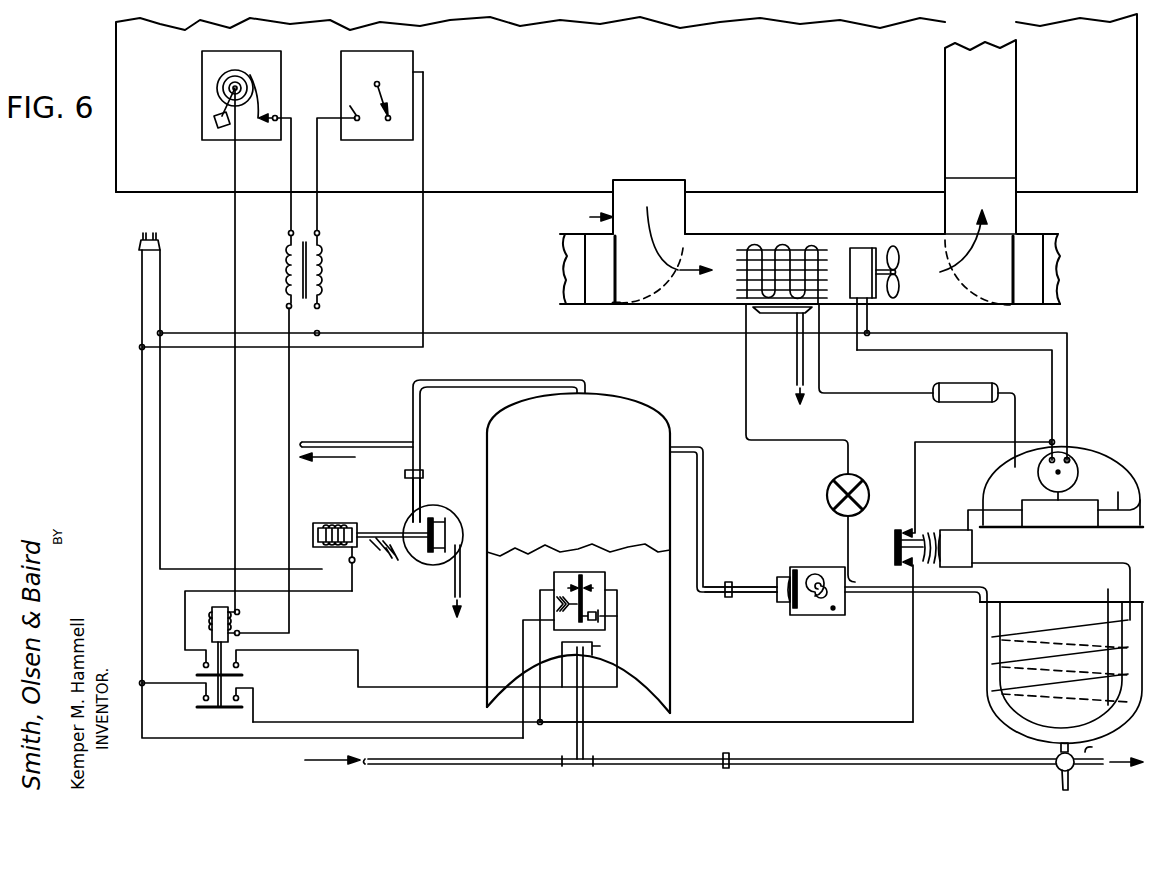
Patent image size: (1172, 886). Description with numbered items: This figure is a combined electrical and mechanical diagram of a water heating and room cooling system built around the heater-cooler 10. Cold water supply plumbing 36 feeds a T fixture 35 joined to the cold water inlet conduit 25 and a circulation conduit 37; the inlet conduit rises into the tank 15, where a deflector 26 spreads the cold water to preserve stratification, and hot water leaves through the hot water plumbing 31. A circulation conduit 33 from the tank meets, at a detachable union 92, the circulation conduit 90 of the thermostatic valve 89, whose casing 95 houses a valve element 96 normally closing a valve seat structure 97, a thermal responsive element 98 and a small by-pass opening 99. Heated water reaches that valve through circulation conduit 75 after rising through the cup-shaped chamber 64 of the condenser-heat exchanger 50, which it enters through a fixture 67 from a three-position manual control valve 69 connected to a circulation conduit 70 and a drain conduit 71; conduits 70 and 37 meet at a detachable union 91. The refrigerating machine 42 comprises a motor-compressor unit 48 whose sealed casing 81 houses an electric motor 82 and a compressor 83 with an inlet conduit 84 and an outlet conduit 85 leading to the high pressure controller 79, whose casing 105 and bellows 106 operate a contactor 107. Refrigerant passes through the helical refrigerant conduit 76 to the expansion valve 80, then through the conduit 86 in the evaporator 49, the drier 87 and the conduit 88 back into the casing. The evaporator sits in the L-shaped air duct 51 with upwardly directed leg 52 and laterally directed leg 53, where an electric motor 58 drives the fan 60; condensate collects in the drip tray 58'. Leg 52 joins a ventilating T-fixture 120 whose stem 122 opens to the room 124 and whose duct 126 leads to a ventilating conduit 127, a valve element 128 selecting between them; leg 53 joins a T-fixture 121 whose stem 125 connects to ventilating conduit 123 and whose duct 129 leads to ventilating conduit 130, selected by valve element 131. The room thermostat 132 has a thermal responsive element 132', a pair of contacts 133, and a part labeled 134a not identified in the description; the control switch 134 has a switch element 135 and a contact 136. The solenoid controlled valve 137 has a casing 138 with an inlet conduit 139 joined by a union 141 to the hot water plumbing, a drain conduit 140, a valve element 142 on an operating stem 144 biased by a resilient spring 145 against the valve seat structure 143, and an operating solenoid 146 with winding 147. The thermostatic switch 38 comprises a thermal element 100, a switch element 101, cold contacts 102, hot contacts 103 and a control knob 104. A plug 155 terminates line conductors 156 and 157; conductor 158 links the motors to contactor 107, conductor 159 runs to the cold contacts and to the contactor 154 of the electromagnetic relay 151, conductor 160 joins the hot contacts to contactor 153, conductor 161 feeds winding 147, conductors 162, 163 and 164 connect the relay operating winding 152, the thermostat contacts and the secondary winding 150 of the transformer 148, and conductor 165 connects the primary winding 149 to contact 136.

The heater-cooler 10 is at (678, 393).
The tank 15 is at (560, 518).
The cold water inlet conduit 25 is at (583, 700).
The deflector 26 is at (598, 654).
The hot water plumbing 31 is at (418, 421).
The circulation conduit 33 is at (705, 490).
The T fixture 35 is at (585, 759).
The cold water supply plumbing 36 is at (527, 759).
The circulation conduit 37 is at (650, 759).
The thermostatic switch 38 is at (548, 552).
The refrigerating machine 42 is at (903, 427).
The motor-compressor unit 48 is at (1080, 449).
The evaporator 49 is at (757, 245).
The condenser-heat exchanger 50 is at (988, 630).
The air duct 51 is at (808, 245).
The upwardly directed leg 52 is at (726, 228).
The laterally directed leg 53 is at (932, 233).
The electric motor 58 is at (862, 275).
The drip tray 58' is at (765, 319).
The fan 60 is at (893, 248).
The cup-shaped chamber 64 is at (1005, 728).
The fixture 67 is at (1096, 750).
The three-position manual control valve 69 is at (1055, 766).
The circulation conduit 70 is at (880, 759).
The drain conduit 71 is at (1072, 776).
The circulation conduit 75 is at (875, 593).
The helical refrigerant conduit 76 is at (990, 660).
The high pressure controller 79 is at (956, 548).
The expansion valve 80 is at (828, 490).
The sealed casing 81 is at (985, 496).
The electric motor 82 is at (1078, 476).
The compressor 83 is at (1060, 513).
The inlet conduit 84 is at (1140, 485).
The outlet conduit 85 is at (1000, 510).
The conduit 86 is at (752, 440).
The drier 87 is at (965, 387).
The conduit 88 is at (1016, 432).
The thermostatic valve 89 is at (808, 567).
The circulation conduit 90 is at (752, 594).
The detachable union 91 is at (728, 768).
The detachable union 92 is at (729, 582).
The casing 95 is at (840, 620).
The movable valve element 96 is at (806, 614).
The valve seat structure 97 is at (783, 604).
The thermal responsive element 98 is at (826, 576).
The by-pass opening 99 is at (792, 574).
The thermal element 100 is at (557, 602).
The switch element 101 is at (580, 572).
The cold contacts 102 is at (567, 575).
The hot contacts 103 is at (584, 582).
The manually adjustable control knob 104 is at (605, 622).
The casing 105 is at (972, 548).
The bellows 106 is at (932, 530).
The contactor 107 is at (892, 546).
The ventilating T-fixture 120 is at (587, 218).
The ventilating T-fixture 121 is at (1016, 224).
The stem 122 is at (672, 193).
The ventilating conduit 123 is at (1003, 143).
The room 124 is at (626, 103).
The stem 125 is at (1008, 187).
The duct 126 is at (600, 306).
The ventilating conduit 127 is at (563, 255).
The valve element 128 is at (616, 276).
The duct 129 is at (1030, 310).
The ventilating conduit 130 is at (1062, 258).
The valve element 131 is at (1011, 278).
The room thermostat 132 is at (218, 95).
The thermal responsive element 132' is at (253, 75).
The contacts 133 is at (258, 112).
The control switch 134 is at (413, 58).
The mercury switch 134a is at (230, 98).
The manually operable switch element 135 is at (397, 106).
The contact 136 is at (361, 106).
The solenoid controlled valve 137 is at (433, 512).
The casing 138 is at (396, 558).
The inlet conduit 139 is at (418, 490).
The drain conduit 140 is at (455, 582).
The union 141 is at (423, 472).
The valve element 142 is at (451, 535).
The valve seat structure 143 is at (447, 523).
The operating stem 144 is at (385, 531).
The resilient spring 145 is at (354, 553).
The operating solenoid 146 is at (313, 533).
The operating winding 147 is at (343, 524).
The transformer 148 is at (298, 244).
The primary winding 149 is at (323, 283).
The secondary winding 150 is at (288, 287).
The electromagnetic relay 151 is at (228, 619).
The operating winding 152 is at (212, 625).
The contactor 153 is at (242, 676).
The contactor 154 is at (197, 710).
The plug 155 is at (160, 245).
The line conductor 156 is at (141, 290).
The line conductor 157 is at (160, 292).
The conductor 158 is at (922, 442).
The conductor 159 is at (778, 722).
The conductor 160 is at (370, 686).
The conductor 161 is at (343, 588).
The conductor 162 is at (234, 420).
The conductor 163 is at (290, 176).
The conductor 164 is at (289, 420).
The conductor 165 is at (318, 176).